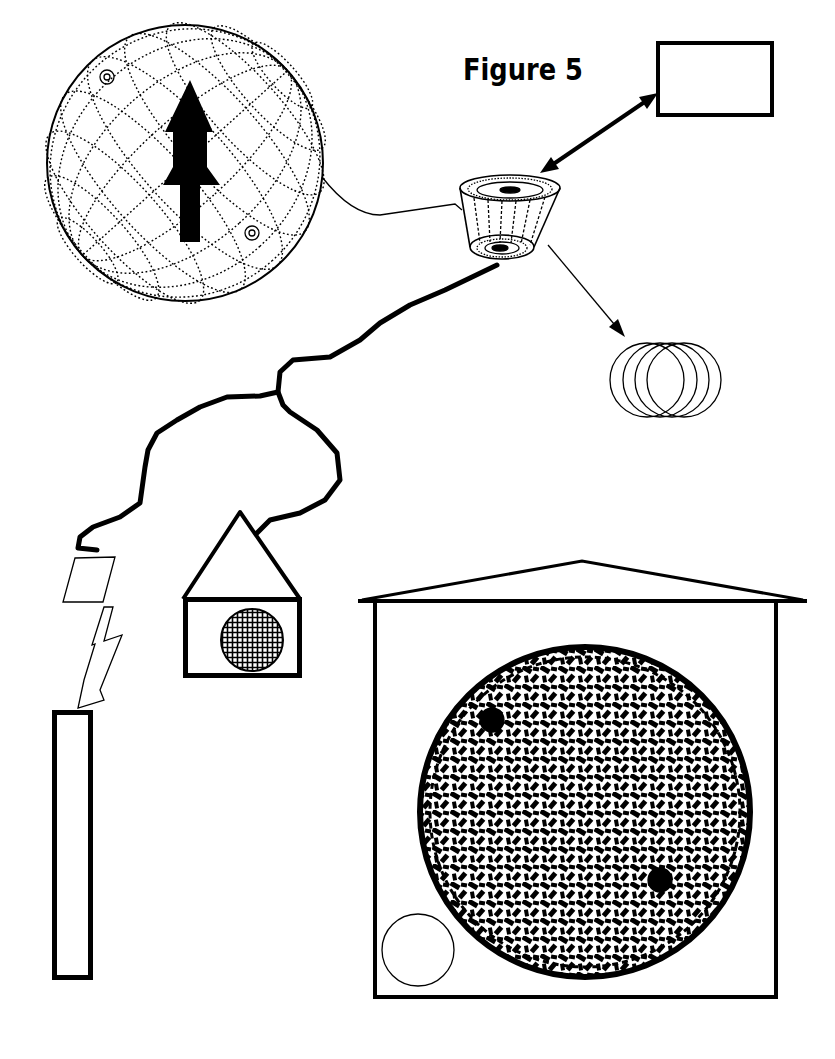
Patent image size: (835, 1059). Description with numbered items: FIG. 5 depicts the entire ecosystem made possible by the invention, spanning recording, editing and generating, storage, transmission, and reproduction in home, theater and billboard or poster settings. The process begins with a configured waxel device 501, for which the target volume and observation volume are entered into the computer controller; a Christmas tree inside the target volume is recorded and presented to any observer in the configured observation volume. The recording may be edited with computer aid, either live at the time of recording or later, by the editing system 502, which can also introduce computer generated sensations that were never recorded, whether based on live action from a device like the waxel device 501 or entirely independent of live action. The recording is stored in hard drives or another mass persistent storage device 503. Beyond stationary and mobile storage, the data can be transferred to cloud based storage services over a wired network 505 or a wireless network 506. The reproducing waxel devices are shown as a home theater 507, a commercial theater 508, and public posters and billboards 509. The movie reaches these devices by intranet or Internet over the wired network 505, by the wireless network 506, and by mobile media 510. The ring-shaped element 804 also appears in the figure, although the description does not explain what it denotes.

The configured waxel device 501 is at (194, 181).
The editing system 502 is at (656, 113).
The mass persistent storage device 503 is at (473, 257).
The wired network 505 is at (287, 407).
The wireless network 506 is at (73, 632).
The home theater 507 is at (269, 594).
The commercial theater 508 is at (582, 761).
The public posters and billboards 509 is at (109, 845).
The mobile media 510 is at (421, 950).
The ring stack 804 is at (686, 417).